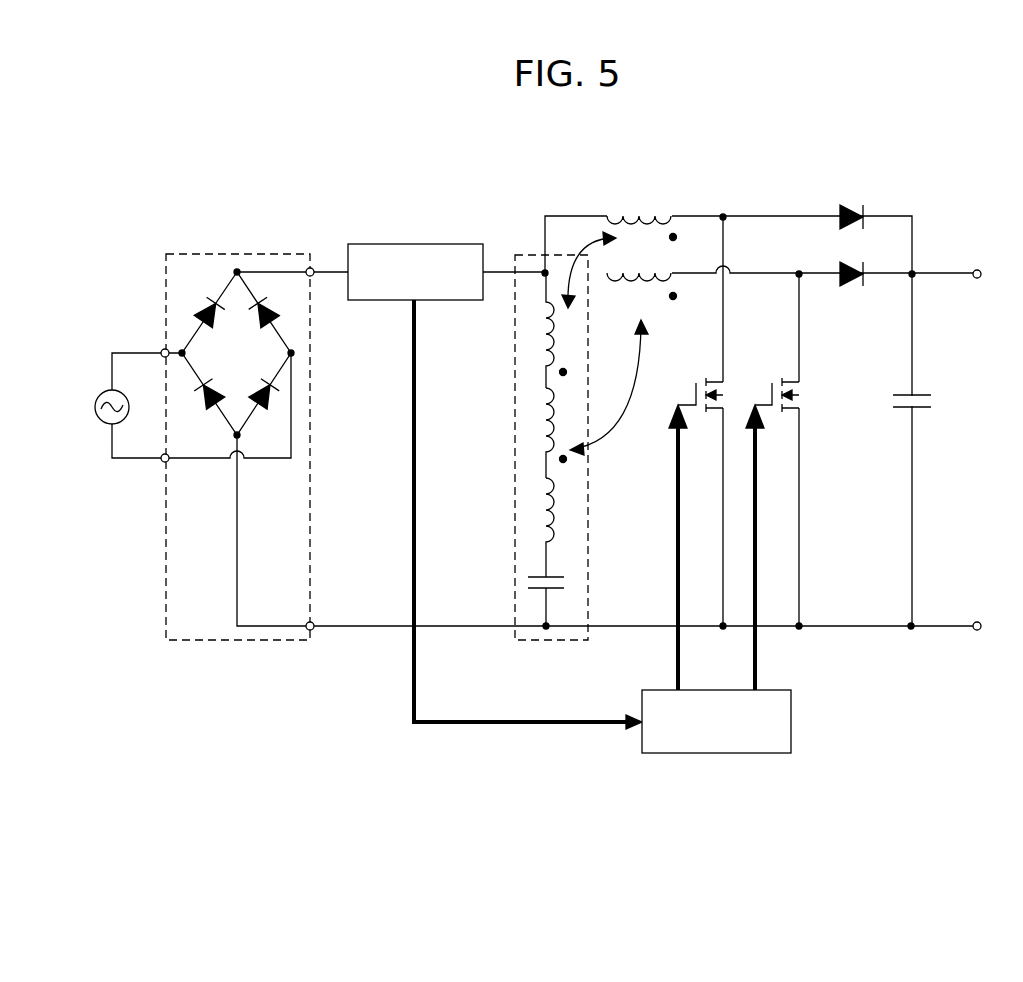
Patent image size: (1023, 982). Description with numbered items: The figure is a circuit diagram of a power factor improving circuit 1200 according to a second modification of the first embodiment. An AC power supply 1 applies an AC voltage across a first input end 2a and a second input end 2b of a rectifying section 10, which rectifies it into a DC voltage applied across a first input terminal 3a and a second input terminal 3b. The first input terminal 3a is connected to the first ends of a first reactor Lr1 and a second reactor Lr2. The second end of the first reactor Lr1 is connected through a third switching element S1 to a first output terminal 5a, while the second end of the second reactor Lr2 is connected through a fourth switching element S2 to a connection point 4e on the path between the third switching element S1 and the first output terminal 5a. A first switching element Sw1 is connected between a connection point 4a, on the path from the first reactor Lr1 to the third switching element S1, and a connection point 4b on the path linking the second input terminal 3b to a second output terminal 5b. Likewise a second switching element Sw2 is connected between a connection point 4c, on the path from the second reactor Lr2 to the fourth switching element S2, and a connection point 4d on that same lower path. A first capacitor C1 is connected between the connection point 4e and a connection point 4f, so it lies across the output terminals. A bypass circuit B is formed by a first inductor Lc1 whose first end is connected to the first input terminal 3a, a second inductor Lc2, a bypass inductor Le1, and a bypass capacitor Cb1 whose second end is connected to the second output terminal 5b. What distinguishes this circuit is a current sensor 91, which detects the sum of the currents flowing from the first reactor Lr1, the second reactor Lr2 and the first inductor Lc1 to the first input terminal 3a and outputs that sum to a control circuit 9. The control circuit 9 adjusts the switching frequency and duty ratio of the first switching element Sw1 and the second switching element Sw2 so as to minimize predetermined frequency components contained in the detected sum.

The AC power supply 1 is at (98, 392).
The first input end 2a is at (161, 350).
The second input end 2b is at (162, 462).
The first input terminal 3a is at (312, 268).
The second input terminal 3b is at (311, 630).
The rectifying section 10 is at (243, 253).
The current sensor 91 is at (418, 243).
The power factor improving circuit 1200 is at (170, 717).
The bypass circuit B is at (590, 491).
The first reactor Lr1 is at (642, 215).
The second reactor Lr2 is at (642, 273).
The first inductor Lc1 is at (531, 330).
The second inductor Lc2 is at (531, 433).
The bypass inductor Le1 is at (523, 527).
The bypass capacitor Cb1 is at (524, 598).
The first switching element Sw1 is at (696, 525).
The second switching element Sw2 is at (772, 525).
The third switching element S1 is at (850, 206).
The fourth switching element S2 is at (853, 288).
The first capacitor C1 is at (928, 401).
The connection point 4a is at (725, 215).
The connection point 4b is at (723, 630).
The connection point 4c is at (798, 272).
The connection point 4d is at (799, 630).
The connection point 4e is at (913, 272).
The connection point 4f is at (911, 630).
The first output terminal 5a is at (977, 280).
The second output terminal 5b is at (977, 621).
The control circuit 9 is at (713, 757).